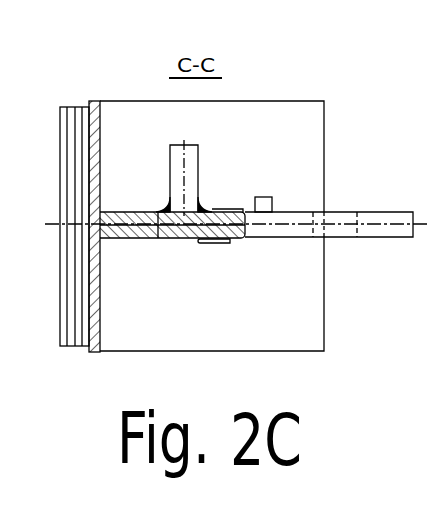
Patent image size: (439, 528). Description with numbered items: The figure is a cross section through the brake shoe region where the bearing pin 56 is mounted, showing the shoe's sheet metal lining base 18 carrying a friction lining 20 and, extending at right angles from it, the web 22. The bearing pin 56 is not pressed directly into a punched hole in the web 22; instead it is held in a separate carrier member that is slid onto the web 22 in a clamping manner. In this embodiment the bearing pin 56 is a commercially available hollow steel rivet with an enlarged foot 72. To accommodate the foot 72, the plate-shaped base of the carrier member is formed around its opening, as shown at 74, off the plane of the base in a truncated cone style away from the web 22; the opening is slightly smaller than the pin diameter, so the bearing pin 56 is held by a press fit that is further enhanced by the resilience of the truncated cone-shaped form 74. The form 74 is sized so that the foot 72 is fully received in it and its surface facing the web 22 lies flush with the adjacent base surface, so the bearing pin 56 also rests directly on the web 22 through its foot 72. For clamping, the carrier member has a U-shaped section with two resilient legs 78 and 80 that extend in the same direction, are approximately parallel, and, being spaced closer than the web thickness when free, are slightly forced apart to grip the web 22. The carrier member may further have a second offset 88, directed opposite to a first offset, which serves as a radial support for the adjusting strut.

The sheet metal lining base 18 is at (302, 275).
The friction lining 20 is at (80, 140).
The web 22 is at (177, 240).
The bearing pin 56 is at (198, 163).
The foot 72 is at (157, 240).
The truncated cone-shaped form 74 is at (158, 203).
The leg 78 is at (232, 208).
The leg 80 is at (223, 244).
The second offset 88 is at (273, 188).